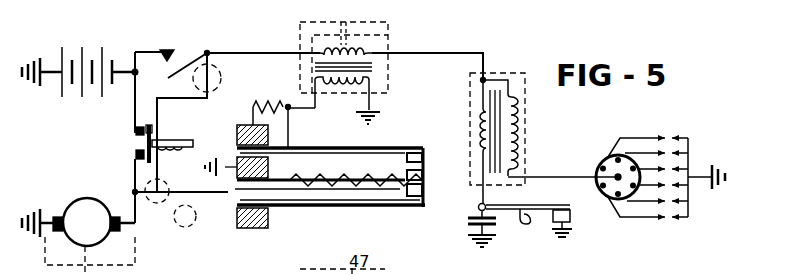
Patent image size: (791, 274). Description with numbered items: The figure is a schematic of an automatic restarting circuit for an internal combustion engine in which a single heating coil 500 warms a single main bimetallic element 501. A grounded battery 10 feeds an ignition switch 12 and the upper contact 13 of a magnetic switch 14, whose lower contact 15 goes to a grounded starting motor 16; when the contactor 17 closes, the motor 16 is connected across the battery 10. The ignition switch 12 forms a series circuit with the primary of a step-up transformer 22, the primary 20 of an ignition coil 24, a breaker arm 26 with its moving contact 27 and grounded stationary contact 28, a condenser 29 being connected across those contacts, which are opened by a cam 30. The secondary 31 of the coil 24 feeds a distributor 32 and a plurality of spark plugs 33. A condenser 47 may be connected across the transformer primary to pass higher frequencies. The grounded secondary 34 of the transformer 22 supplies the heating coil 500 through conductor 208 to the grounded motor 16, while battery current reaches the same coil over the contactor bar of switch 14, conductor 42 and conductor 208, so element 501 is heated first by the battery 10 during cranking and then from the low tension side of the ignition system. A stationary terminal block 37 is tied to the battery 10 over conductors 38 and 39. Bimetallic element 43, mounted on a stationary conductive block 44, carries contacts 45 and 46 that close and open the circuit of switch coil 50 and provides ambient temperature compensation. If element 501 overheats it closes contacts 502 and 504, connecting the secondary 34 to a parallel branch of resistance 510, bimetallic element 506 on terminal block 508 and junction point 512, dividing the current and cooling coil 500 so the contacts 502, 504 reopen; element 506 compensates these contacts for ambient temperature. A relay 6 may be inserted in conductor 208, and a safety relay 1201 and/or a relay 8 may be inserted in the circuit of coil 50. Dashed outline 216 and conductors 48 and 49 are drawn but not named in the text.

The battery 10 is at (86, 42).
The conductor 39 is at (158, 51).
The ignition switch 12 is at (179, 68).
The safety relay 1201 is at (189, 80).
The conductor 48 is at (262, 53).
The upper contact 13 is at (134, 133).
The magnetic switch 14 is at (126, 143).
The lower contact 15 is at (133, 158).
The contactor 17 is at (157, 153).
The switch coil 50 is at (178, 138).
The conductor 38 is at (160, 106).
The conductor 42 is at (133, 195).
The relay 6 is at (157, 202).
The relay 8 is at (185, 226).
The starting motor 16 is at (78, 222).
The motor ground connection 216 is at (92, 265).
The resistance 510 is at (267, 98).
The junction point 512 is at (288, 106).
The terminal block 508 is at (246, 113).
The bimetallic element 506 is at (343, 146).
The stationary terminal block 37 is at (233, 158).
The heating coil 500 is at (338, 166).
The bimetallic element 501 is at (397, 168).
The conductor 208 is at (232, 192).
The bimetallic element 43 is at (318, 205).
The stationary conductive block 44 is at (245, 229).
The contact 504 is at (424, 140).
The contact 502 is at (424, 173).
The contact 46 is at (425, 183).
The contact 45 is at (425, 200).
The condenser 47 is at (380, 35).
The step-up transformer 22 is at (388, 68).
The secondary 34 is at (350, 92).
The conductor 49 is at (455, 55).
The ignition coil 24 is at (522, 72).
The primary 20 is at (476, 118).
The secondary 31 is at (512, 137).
The breaker arm 26 is at (525, 206).
The cam 30 is at (522, 225).
The moving contact 27 is at (569, 215).
The stationary contact 28 is at (571, 221).
The condenser 29 is at (465, 223).
The distributor 32 is at (607, 157).
The spark plugs 33 is at (670, 131).